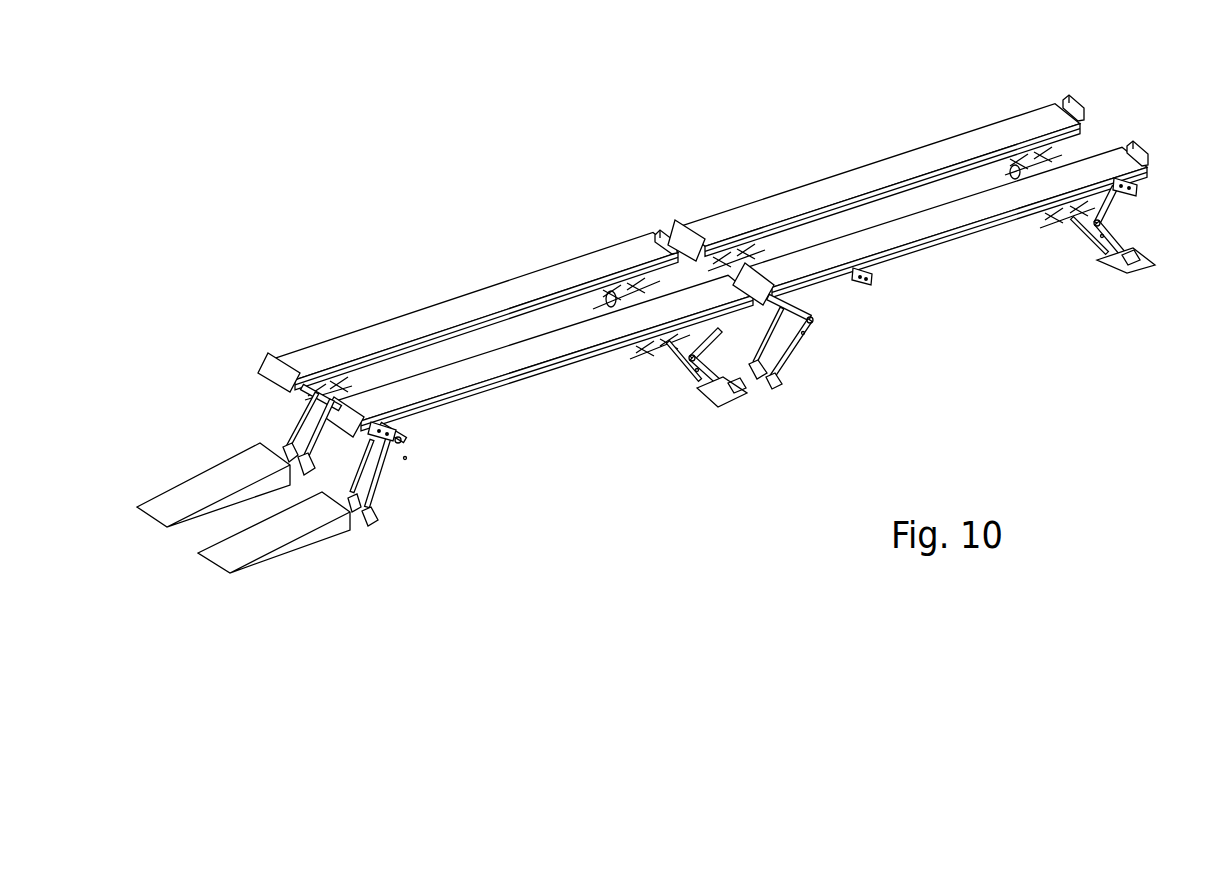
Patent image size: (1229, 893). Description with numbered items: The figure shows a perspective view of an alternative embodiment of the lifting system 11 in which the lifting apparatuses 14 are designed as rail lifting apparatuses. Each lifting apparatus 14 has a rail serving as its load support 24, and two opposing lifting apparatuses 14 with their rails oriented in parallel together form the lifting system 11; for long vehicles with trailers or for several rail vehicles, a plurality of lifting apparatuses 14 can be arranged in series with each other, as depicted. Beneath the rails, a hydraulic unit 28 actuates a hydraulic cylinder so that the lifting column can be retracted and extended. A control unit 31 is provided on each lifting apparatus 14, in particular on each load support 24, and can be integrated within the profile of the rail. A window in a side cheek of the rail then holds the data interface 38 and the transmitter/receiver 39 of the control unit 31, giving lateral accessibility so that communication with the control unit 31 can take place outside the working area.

The lifting system 11 is at (671, 213).
The lifting apparatus 14 is at (257, 340).
The load support 24 is at (320, 332).
The hydraulic unit 28 is at (690, 352).
The control unit 31 is at (422, 428).
The data interface 38 is at (861, 288).
The transmitter/receiver 39 is at (872, 286).